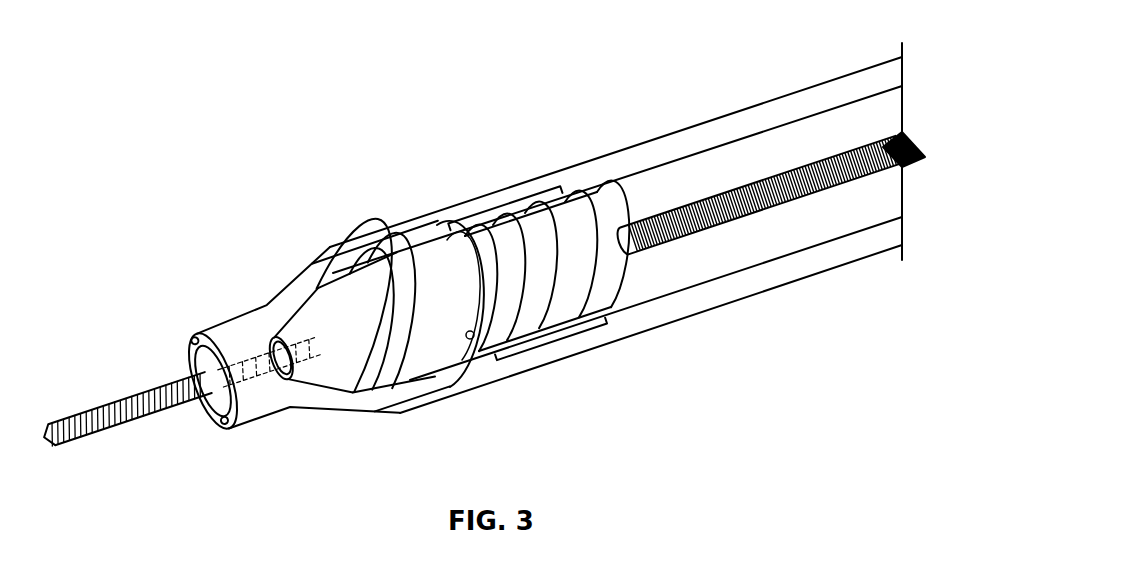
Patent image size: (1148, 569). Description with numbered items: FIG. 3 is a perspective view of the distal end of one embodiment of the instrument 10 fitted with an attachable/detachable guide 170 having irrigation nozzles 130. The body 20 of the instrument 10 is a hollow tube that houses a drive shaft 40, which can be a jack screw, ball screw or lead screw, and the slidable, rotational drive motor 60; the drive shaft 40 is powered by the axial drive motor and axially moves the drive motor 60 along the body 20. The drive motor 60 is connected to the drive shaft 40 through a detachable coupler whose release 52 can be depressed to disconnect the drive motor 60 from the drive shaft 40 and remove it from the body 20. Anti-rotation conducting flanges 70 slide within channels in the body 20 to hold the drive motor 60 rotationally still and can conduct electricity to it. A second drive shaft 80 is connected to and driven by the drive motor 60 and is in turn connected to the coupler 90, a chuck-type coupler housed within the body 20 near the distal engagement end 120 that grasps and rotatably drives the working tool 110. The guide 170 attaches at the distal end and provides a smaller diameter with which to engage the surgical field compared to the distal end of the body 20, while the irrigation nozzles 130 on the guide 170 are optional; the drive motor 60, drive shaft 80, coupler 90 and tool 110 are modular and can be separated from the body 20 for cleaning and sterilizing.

The instrument 10 is at (808, 86).
The body 20 is at (706, 163).
The drive shaft 40 is at (717, 229).
The release 52 is at (466, 341).
The drive motor 60 is at (508, 232).
The anti-rotation conducting flanges 70 is at (527, 347).
The drive shaft 80 is at (437, 242).
The coupler 90 is at (322, 375).
The working tool 110 is at (97, 432).
The engagement end 120 is at (392, 243).
The irrigation nozzles 130 is at (195, 338).
The guide 170 is at (248, 312).